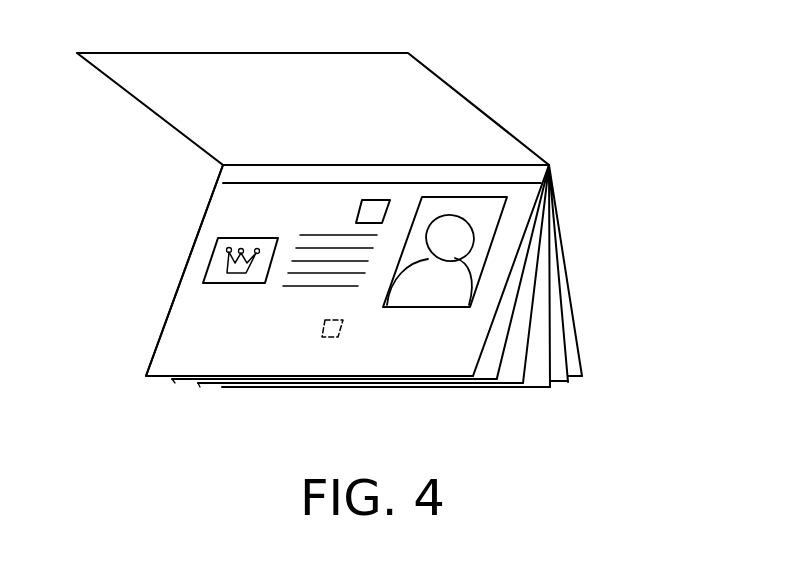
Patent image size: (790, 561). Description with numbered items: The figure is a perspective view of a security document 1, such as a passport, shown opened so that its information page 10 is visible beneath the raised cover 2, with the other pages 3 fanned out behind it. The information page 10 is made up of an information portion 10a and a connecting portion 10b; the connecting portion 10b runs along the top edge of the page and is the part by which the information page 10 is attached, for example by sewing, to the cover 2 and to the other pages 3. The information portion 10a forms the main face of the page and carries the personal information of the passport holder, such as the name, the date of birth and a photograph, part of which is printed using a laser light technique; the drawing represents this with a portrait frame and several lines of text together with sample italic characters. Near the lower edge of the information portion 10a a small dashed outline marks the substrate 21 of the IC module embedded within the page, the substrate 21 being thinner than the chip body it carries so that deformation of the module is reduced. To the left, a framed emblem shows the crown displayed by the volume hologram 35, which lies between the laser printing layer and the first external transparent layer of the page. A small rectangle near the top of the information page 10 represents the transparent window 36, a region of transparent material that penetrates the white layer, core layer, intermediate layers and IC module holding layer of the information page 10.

The security document 1 is at (376, 250).
The cover 2 is at (460, 113).
The other pages 3 is at (557, 362).
The information page 10 is at (424, 362).
The information portion 10a is at (186, 320).
The connecting portion 10b is at (226, 175).
The substrate 21 is at (322, 340).
The volume hologram 35 is at (218, 263).
The transparent window 36 is at (377, 205).